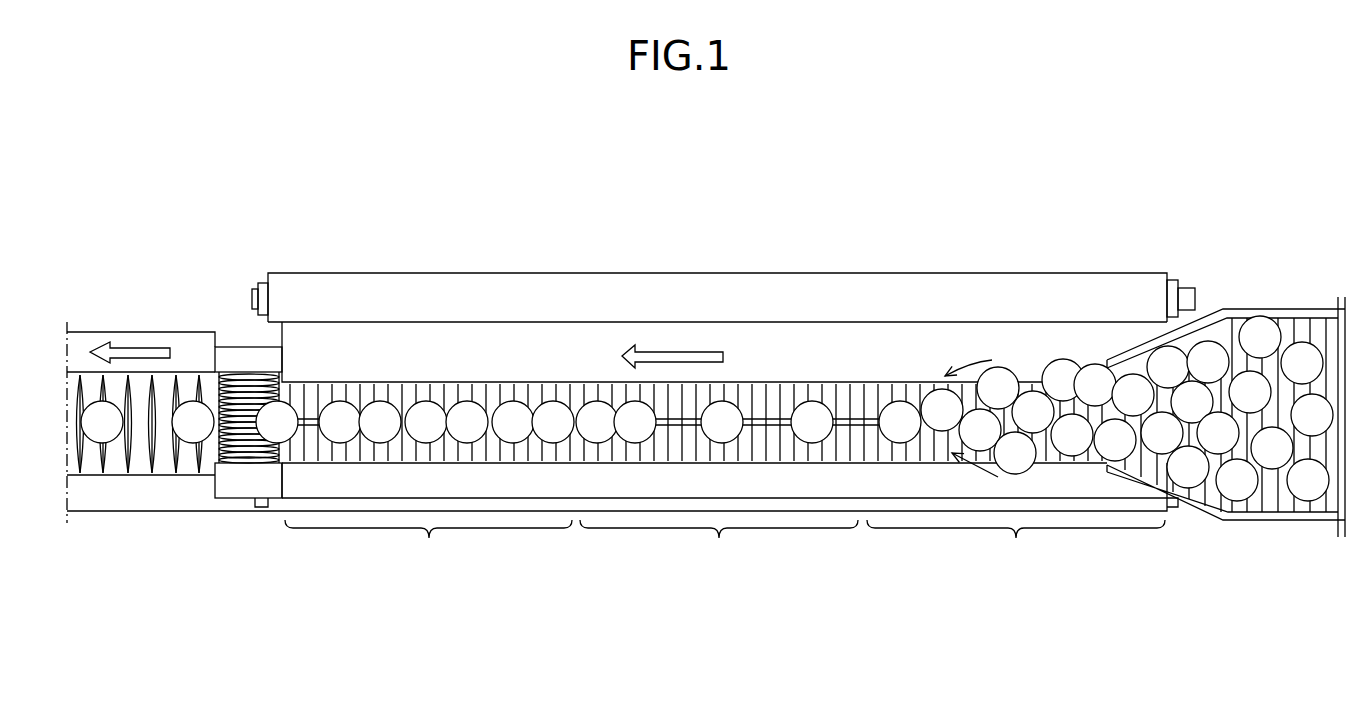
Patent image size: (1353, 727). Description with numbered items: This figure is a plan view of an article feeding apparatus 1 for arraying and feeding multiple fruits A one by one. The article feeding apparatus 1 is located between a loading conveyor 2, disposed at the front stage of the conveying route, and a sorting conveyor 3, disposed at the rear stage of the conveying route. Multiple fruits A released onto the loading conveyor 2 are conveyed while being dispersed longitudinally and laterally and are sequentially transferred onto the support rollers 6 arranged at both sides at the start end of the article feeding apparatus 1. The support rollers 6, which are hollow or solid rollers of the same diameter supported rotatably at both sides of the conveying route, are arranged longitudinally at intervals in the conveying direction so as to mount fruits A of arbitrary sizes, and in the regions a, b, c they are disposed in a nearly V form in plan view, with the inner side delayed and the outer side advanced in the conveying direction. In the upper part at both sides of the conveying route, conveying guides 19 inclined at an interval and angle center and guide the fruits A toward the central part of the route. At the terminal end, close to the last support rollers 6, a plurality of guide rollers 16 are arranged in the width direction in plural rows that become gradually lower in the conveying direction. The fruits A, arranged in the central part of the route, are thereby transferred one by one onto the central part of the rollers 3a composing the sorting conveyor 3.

The article feeding apparatus 1 is at (736, 239).
The loading conveyor 2 is at (1284, 306).
The sorting conveyor 3 is at (141, 397).
The rollers 3a is at (187, 468).
The support rollers 6 is at (318, 401).
The guide rollers 16 is at (263, 378).
The conveying guides 19 is at (292, 326).
The fruits A is at (108, 413).
The region a is at (1016, 550).
The region b is at (719, 550).
The region c is at (428, 550).